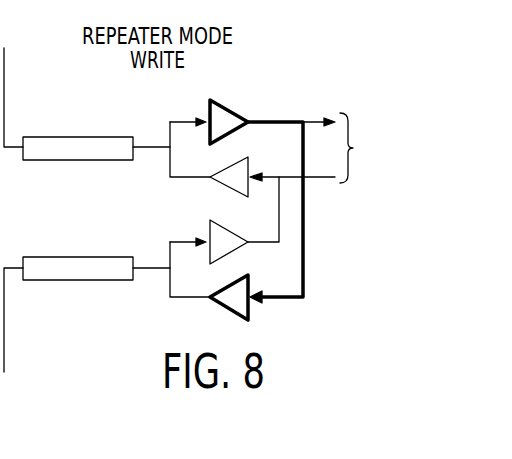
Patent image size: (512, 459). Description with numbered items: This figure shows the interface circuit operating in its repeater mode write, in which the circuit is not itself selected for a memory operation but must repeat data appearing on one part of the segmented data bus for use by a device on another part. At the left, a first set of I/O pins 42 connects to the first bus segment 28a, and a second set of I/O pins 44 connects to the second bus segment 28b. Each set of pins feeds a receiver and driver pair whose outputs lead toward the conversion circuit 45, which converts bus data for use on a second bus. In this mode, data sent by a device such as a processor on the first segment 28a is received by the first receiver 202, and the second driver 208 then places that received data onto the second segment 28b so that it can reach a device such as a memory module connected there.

The first bus segment 28a is at (4, 93).
The second bus segment 28b is at (4, 333).
The first set of I/O pins 42 is at (107, 160).
The second set of I/O pins 44 is at (107, 280).
The conversion circuit 45 is at (410, 159).
The first receiver 202 is at (232, 108).
The second driver 208 is at (250, 307).